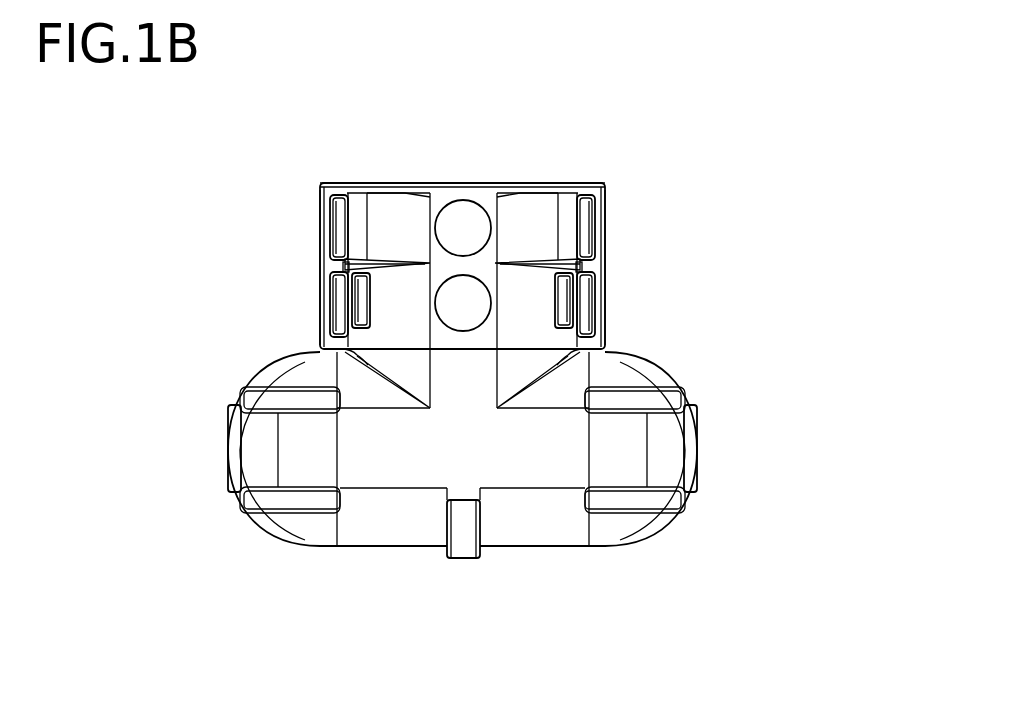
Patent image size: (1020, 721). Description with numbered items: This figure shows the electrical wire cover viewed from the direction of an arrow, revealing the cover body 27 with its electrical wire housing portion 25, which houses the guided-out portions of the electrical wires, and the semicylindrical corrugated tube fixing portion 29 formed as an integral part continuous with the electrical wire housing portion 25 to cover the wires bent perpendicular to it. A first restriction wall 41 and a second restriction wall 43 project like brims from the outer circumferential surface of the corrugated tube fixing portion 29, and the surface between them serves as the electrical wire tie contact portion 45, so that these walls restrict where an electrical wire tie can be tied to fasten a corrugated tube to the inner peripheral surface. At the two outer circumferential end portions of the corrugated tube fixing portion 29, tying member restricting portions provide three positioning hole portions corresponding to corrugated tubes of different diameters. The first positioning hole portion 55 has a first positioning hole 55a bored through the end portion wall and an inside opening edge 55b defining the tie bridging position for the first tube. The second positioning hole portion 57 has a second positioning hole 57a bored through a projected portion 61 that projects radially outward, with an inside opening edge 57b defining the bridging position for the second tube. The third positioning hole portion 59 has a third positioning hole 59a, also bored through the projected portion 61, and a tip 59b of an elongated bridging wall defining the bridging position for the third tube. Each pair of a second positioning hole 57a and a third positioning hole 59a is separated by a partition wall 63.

The electrical wire housing portion 25 is at (699, 444).
The cover body 27 is at (624, 155).
The corrugated tube fixing portion 29 is at (489, 184).
The first restriction wall 41 is at (370, 190).
The second restriction wall 43 is at (390, 258).
The electrical wire tie contact portion 45 is at (405, 212).
The first positioning hole portion 55 is at (172, 248).
The first positioning hole 55a is at (356, 290).
The inside opening edge 55b is at (362, 300).
The second positioning hole portion 57 is at (210, 155).
The second positioning hole 57a is at (344, 226).
The inside opening edge 57b is at (338, 215).
The third positioning hole portion 59 is at (230, 312).
The third positioning hole 59a is at (340, 315).
The tip of elongated bridging wall 59b is at (340, 325).
The projected portion 61 is at (321, 247).
The partition wall 63 is at (341, 268).